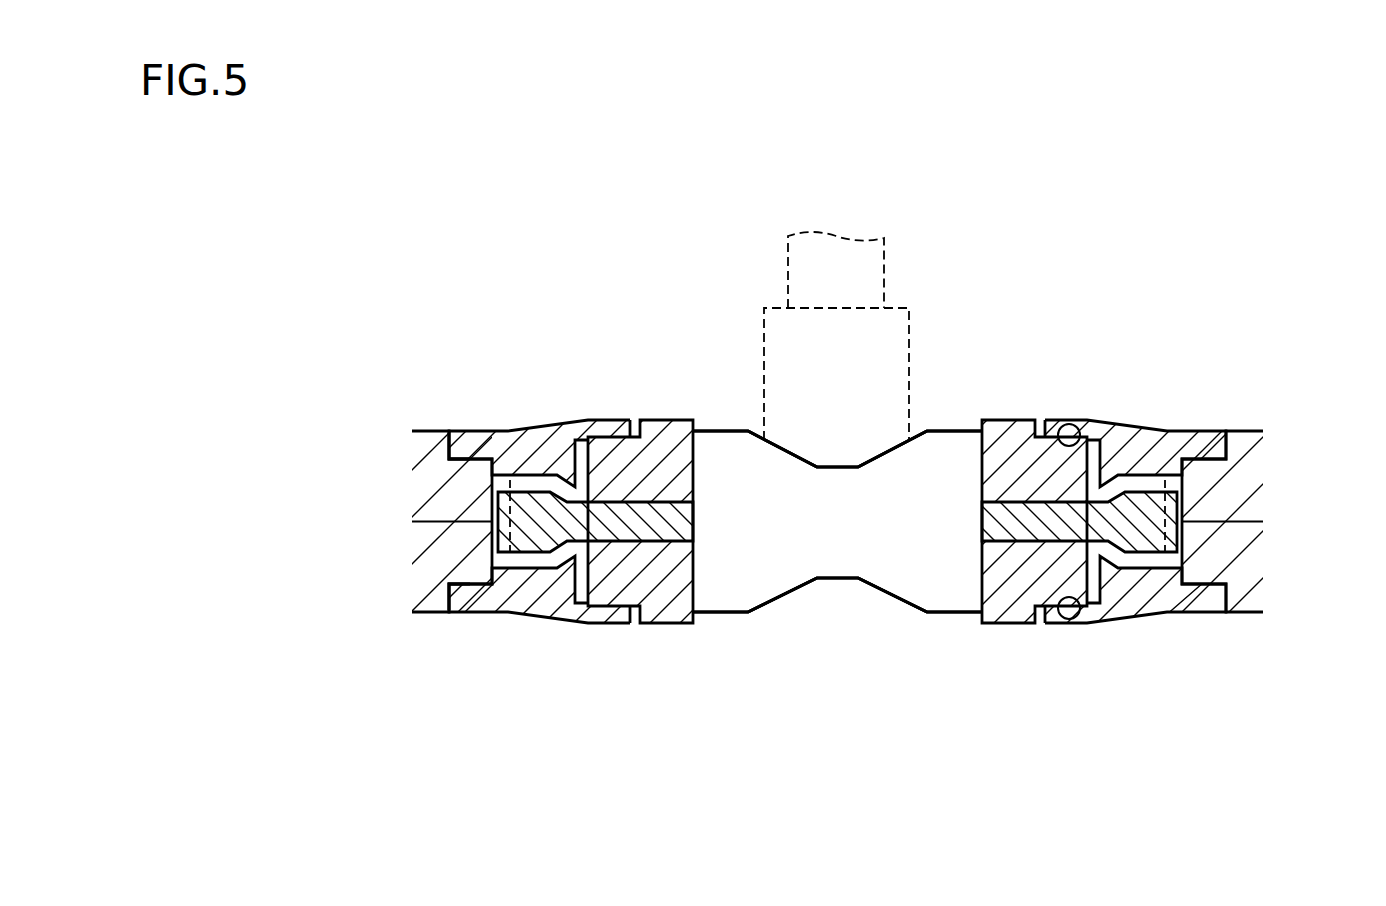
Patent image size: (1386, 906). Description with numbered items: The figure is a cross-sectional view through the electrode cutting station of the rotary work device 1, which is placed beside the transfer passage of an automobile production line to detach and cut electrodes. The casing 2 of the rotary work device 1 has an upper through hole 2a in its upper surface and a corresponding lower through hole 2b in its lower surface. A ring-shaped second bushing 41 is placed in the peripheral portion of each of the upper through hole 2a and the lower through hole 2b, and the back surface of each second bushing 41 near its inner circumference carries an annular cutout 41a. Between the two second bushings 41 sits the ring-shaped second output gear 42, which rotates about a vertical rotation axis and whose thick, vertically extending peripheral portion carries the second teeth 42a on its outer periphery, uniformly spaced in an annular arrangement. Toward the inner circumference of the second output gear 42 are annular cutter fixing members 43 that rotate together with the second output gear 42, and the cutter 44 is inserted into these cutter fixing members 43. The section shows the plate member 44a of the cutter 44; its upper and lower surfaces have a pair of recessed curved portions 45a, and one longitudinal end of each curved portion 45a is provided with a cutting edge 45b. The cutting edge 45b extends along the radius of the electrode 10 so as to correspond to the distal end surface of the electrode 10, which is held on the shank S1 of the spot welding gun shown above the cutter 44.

The rotary work device 1 is at (1194, 333).
The casing 2 is at (1243, 429).
The upper through hole 2a is at (466, 446).
The lower through hole 2b is at (462, 612).
The electrode 10 is at (909, 338).
The shank S1 is at (884, 256).
The second bushing 41 is at (1110, 417).
The annular cutout 41a is at (1068, 425).
The second output gear 42 is at (1150, 558).
The second teeth 42a is at (503, 505).
The cutter fixing member 43 is at (662, 438).
The cutter 44 is at (837, 521).
The plate member 44a is at (718, 617).
The curved portion 45a is at (877, 454).
The cutting edge 45b is at (790, 455).